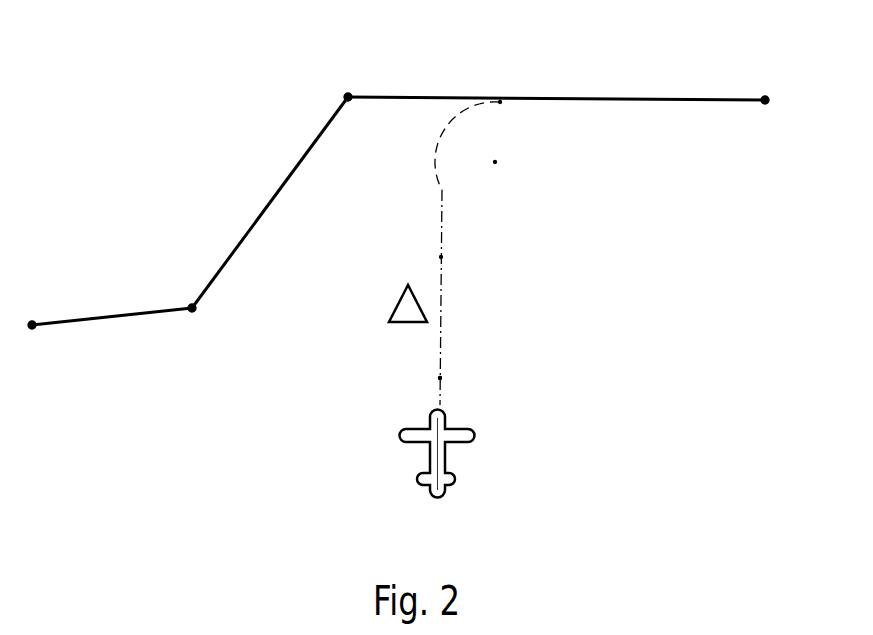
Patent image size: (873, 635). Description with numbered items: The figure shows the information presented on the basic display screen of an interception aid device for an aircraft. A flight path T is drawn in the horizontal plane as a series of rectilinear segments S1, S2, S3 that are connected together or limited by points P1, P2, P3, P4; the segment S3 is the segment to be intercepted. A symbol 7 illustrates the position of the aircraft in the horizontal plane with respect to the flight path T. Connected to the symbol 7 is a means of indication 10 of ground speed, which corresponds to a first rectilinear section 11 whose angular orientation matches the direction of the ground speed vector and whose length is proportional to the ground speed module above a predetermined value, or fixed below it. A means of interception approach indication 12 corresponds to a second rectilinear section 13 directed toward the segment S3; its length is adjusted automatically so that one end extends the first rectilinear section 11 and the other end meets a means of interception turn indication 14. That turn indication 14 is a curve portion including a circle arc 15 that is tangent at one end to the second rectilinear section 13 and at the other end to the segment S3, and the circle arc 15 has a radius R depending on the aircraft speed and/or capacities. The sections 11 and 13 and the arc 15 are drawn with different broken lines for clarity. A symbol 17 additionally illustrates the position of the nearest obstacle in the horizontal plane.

The flight path T is at (222, 115).
The rectilinear segment S1 is at (107, 317).
The rectilinear segment S2 is at (259, 212).
The segment to be intercepted S3 is at (459, 97).
The point P1 is at (32, 329).
The point P2 is at (192, 312).
The point P3 is at (348, 93).
The point P4 is at (766, 97).
The symbol 7 is at (438, 458).
The means of indication 10 is at (405, 377).
The first rectilinear section 11 is at (440, 378).
The means of interception approach indication 12 is at (420, 250).
The second rectilinear section 13 is at (441, 257).
The means of interception turn indication 14 is at (440, 124).
The circle arc 15 is at (497, 104).
The symbol 17 is at (397, 307).
The radius R is at (472, 137).